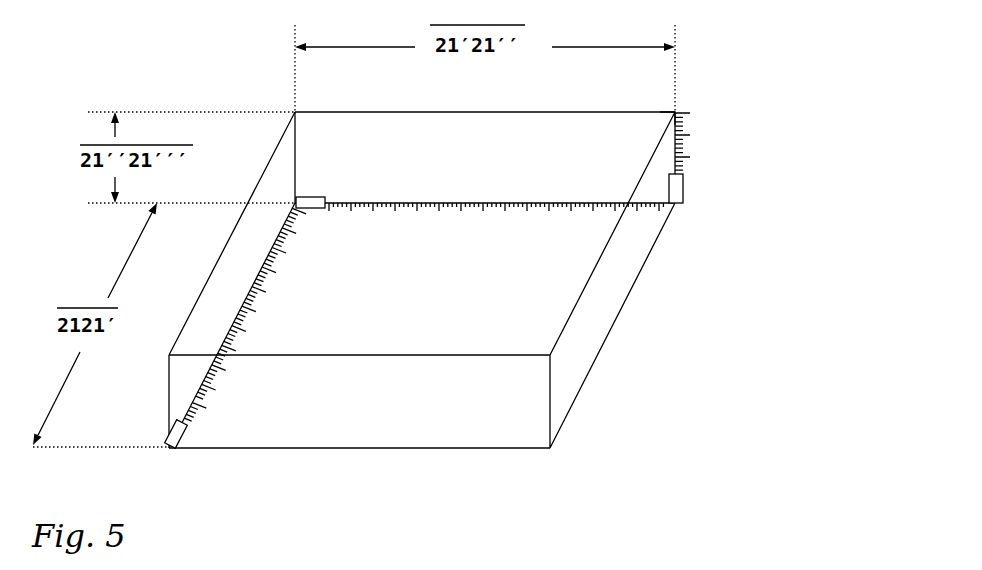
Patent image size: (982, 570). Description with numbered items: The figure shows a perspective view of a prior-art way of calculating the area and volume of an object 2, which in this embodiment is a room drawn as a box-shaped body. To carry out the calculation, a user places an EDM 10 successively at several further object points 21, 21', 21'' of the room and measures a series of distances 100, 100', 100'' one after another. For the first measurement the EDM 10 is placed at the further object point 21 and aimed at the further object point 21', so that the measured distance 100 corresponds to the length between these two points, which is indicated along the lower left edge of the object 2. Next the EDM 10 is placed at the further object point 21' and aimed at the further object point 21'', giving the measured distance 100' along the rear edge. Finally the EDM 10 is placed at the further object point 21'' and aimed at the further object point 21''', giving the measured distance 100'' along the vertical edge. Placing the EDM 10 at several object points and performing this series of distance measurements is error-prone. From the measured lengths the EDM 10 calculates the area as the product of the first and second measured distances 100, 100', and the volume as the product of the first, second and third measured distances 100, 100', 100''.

The object 2 is at (622, 307).
The EDM 10 is at (312, 197).
The further object point 21 is at (207, 421).
The further object point 21' is at (343, 181).
The further object point 21'' is at (725, 179).
The further object point 21''' is at (608, 97).
The distance 100 is at (253, 325).
The distance 100' is at (496, 174).
The distance 100'' is at (738, 141).